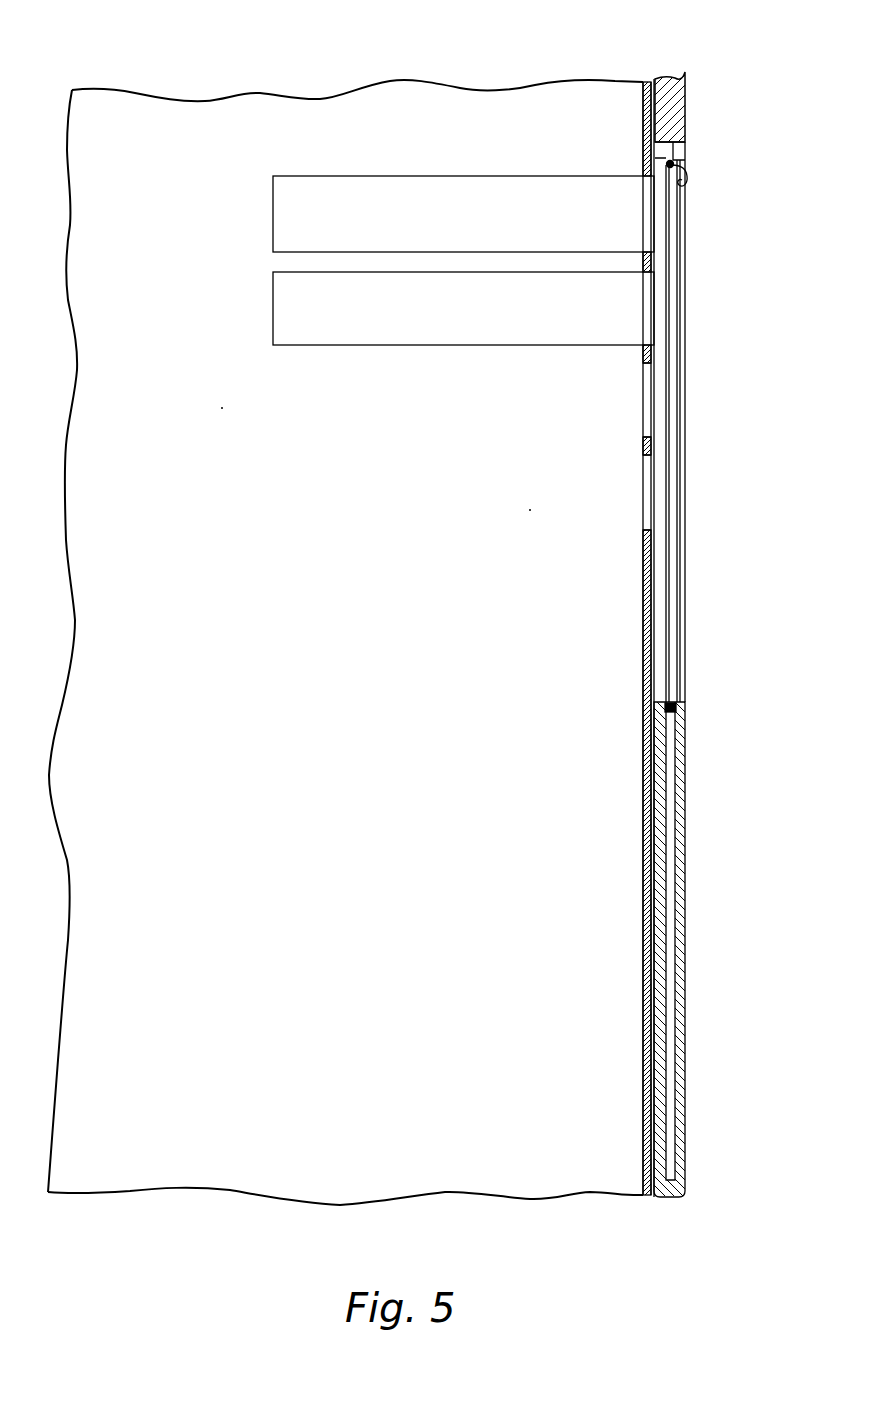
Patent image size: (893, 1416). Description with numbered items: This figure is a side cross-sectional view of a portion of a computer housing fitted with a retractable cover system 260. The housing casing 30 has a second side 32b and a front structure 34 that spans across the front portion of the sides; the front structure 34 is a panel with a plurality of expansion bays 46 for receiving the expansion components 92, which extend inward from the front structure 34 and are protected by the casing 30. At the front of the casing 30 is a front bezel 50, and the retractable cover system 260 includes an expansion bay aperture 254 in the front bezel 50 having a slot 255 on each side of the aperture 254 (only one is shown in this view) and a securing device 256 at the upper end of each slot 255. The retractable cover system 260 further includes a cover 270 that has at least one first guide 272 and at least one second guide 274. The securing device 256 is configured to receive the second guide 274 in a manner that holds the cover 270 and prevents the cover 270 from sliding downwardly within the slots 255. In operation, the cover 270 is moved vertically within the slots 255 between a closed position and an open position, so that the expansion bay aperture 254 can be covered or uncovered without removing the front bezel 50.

The casing 30 is at (415, 64).
The second side 32b is at (172, 240).
The front structure 34 is at (643, 118).
The expansion bays 46 is at (643, 178).
The front bezel 50 is at (684, 97).
The expansion components 92 is at (318, 176).
The expansion bay aperture 254 is at (680, 153).
The slot 255 is at (672, 799).
The securing device 256 is at (688, 172).
The retractable cover system 260 is at (676, 950).
The cover 270 is at (681, 395).
The first guide 272 is at (676, 712).
The second guide 274 is at (680, 131).